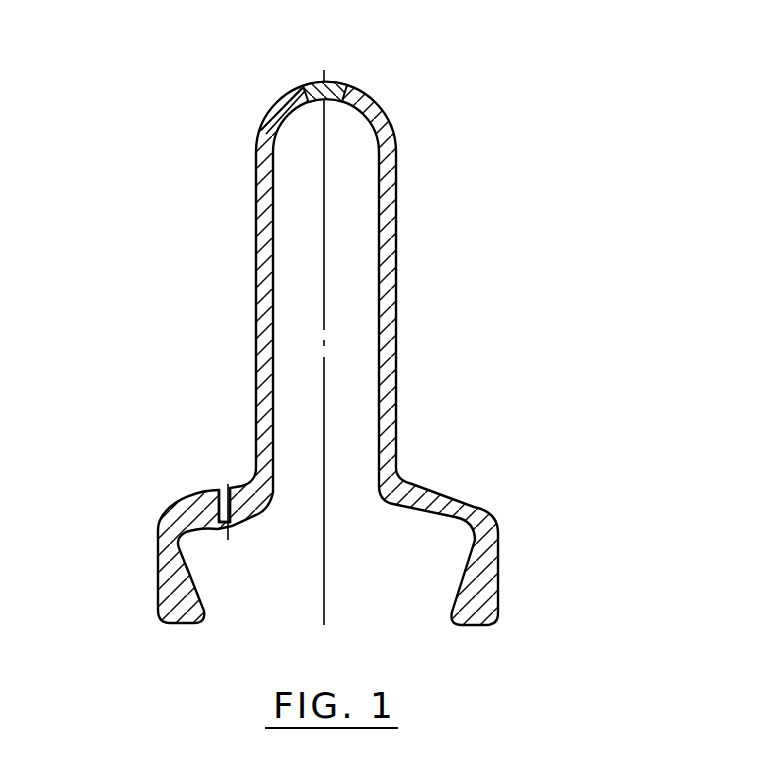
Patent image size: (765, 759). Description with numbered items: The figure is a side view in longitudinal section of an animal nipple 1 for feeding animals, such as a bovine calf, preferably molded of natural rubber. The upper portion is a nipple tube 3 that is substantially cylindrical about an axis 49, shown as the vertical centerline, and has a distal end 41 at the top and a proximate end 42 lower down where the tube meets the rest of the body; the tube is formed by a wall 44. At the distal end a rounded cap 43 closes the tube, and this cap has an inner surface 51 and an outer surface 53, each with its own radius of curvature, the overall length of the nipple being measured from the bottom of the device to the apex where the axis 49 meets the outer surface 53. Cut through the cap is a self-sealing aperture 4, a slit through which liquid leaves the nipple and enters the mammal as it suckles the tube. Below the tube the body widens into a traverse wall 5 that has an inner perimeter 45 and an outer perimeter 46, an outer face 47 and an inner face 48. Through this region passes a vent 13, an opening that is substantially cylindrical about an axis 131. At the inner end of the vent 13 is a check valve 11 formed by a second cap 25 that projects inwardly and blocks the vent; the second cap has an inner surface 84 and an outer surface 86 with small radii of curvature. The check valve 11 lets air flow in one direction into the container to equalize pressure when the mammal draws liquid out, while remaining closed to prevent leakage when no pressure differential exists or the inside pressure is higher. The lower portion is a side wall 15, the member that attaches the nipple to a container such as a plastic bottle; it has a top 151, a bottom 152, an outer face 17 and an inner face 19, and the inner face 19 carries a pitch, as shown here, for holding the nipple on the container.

The nipple 1 is at (243, 300).
The nipple tube 3 is at (401, 189).
The self-sealing aperture 4 is at (335, 80).
The traverse wall 5 is at (505, 497).
The check valve 11 is at (219, 546).
The vent 13 is at (219, 485).
The axis 131 is at (228, 484).
The side wall 15 is at (156, 598).
The outer face 17 is at (503, 593).
The inner face 19 is at (452, 595).
The second cap 25 is at (232, 531).
The distal end 41 is at (381, 89).
The proximate end 42 is at (375, 496).
The cap 43 is at (402, 120).
The wall 44 is at (400, 253).
The inner perimeter 45 is at (408, 471).
The outer perimeter 46 is at (500, 528).
The outer face 47 is at (456, 498).
The inner face 48 is at (437, 519).
The axis 49 is at (320, 623).
The inner surface 51 is at (267, 140).
The outer surface 53 is at (270, 98).
The inner surface 84 is at (215, 534).
The outer surface 86 is at (215, 527).
The top 151 is at (503, 553).
The bottom 152 is at (509, 625).